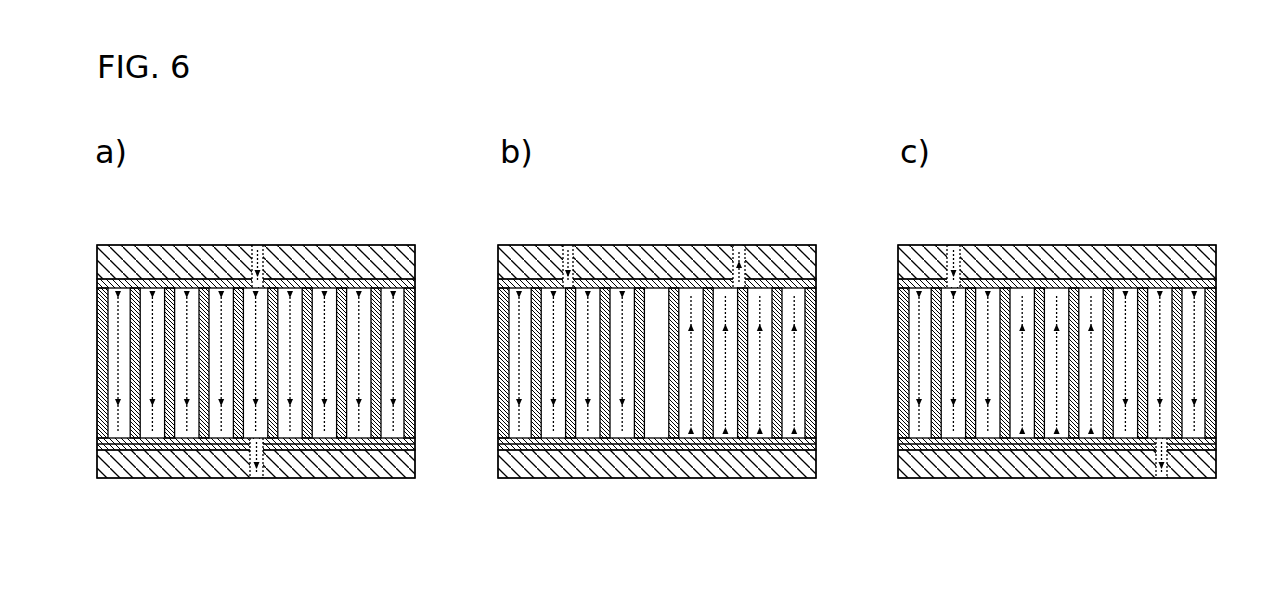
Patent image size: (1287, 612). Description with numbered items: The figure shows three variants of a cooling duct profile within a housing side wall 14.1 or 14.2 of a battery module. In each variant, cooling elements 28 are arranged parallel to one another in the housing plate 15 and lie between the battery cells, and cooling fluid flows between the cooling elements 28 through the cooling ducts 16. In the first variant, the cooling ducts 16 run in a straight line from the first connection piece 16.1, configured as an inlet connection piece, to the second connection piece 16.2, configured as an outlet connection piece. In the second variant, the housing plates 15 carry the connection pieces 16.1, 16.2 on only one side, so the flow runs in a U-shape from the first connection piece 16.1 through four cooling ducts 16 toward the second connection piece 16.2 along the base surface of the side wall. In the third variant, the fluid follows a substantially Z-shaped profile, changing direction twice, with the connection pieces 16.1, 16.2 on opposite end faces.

The housing plate 15 is at (167, 245).
The cooling duct 16 is at (110, 333).
The first connection piece 16.1 is at (252, 245).
The second connection piece 16.2 is at (253, 462).
The cooling element 28 is at (342, 288).
The housing side wall 14.1 is at (1048, 445).
The housing side wall 14.2 is at (1072, 283).